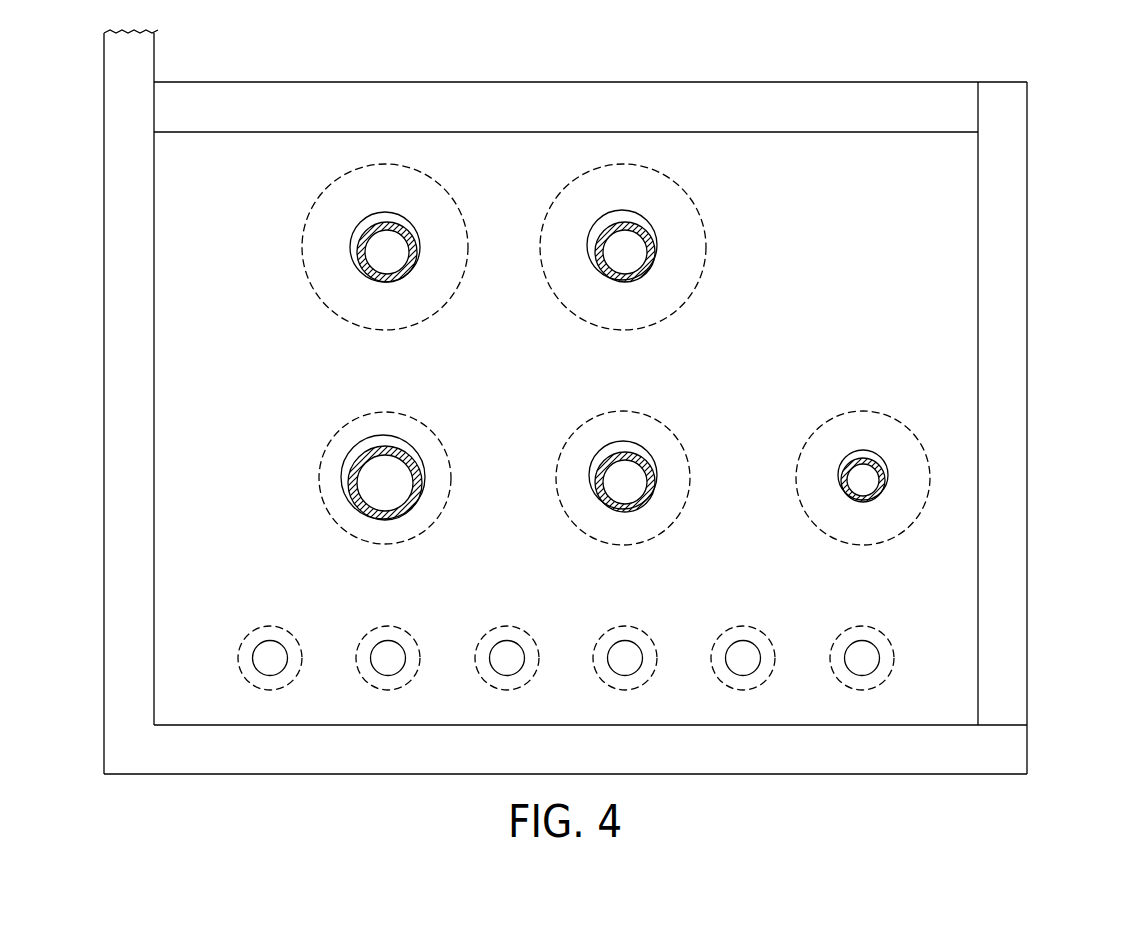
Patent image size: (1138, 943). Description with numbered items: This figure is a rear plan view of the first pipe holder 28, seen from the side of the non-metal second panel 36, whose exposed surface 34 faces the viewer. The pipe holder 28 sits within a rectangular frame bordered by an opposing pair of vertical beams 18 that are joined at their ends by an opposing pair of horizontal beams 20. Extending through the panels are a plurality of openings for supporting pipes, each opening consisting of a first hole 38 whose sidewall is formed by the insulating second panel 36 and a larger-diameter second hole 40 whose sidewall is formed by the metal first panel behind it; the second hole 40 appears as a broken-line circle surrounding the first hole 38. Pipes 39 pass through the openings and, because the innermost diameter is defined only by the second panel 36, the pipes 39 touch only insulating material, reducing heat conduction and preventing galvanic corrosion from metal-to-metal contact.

The vertical beam 18 is at (120, 411).
The horizontal beam 20 is at (397, 97).
The first pipe holder 28 is at (1048, 160).
The exposed surface 34 is at (935, 330).
The second panel 36 is at (875, 258).
The first hole 38 is at (378, 218).
The pipe 39 is at (358, 250).
The second hole 40 is at (638, 165).